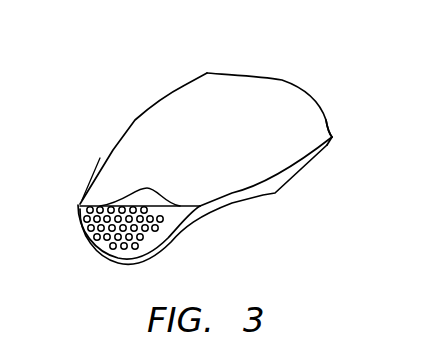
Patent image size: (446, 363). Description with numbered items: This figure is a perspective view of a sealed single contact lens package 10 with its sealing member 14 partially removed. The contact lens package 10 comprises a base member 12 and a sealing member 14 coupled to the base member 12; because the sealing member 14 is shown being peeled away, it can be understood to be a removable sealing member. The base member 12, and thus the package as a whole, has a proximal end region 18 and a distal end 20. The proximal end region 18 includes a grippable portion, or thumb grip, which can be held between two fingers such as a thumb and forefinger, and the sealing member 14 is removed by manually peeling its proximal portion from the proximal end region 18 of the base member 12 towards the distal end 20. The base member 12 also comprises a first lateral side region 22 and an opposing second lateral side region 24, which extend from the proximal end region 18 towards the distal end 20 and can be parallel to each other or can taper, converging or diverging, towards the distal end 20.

The contact lens package 10 is at (218, 147).
The base member 12 is at (214, 204).
The sealing member 14 is at (269, 75).
The proximal end region 18 is at (172, 234).
The distal end 20 is at (356, 80).
The first lateral side region 22 is at (143, 111).
The second lateral side region 24 is at (293, 171).